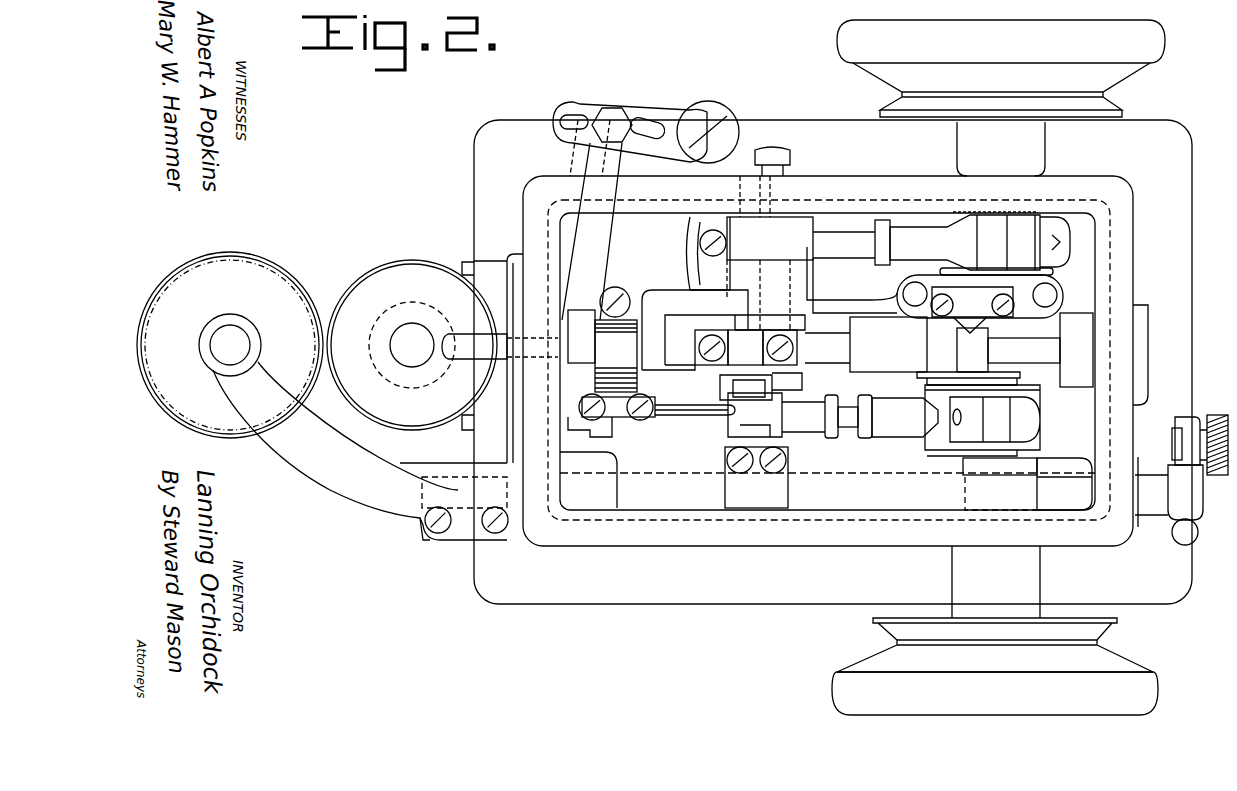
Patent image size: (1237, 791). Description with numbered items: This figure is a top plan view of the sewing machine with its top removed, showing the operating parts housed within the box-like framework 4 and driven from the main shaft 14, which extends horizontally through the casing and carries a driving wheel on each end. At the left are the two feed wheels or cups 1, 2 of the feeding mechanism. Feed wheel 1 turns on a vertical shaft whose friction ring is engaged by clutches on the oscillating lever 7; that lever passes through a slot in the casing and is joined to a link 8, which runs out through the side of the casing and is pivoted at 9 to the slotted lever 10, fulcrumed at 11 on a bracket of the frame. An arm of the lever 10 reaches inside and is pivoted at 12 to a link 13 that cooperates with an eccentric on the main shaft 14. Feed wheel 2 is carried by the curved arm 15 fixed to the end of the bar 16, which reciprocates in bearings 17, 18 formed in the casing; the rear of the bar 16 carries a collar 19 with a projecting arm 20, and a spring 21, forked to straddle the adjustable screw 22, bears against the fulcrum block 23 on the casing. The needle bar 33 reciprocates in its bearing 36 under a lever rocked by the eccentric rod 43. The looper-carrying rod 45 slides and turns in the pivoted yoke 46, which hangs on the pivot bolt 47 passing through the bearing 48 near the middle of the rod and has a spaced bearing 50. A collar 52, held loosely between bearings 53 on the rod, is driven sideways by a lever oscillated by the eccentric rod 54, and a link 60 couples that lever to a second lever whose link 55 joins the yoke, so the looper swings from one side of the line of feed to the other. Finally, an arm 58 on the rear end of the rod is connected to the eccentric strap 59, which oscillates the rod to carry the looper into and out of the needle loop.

The feed wheel 1 is at (396, 262).
The feed wheel 2 is at (298, 284).
The framework 4 is at (520, 228).
The oscillating lever 7 is at (478, 425).
The link 8 is at (590, 258).
The pivot 9 is at (612, 118).
The slotted lever 10 is at (660, 118).
The fulcrum 11 is at (712, 118).
The pivot 12 is at (698, 243).
The link 13 is at (850, 250).
The main shaft 14 is at (1050, 272).
The arm 15 is at (360, 500).
The bar 16 is at (855, 430).
The bearing 17 is at (508, 496).
The bearing 18 is at (1028, 483).
The collar 19 is at (1176, 455).
The projecting arm 20 is at (1190, 472).
The spring 21 is at (1175, 440).
The adjustable screw 22 is at (1207, 425).
The fulcrum block 23 is at (1150, 400).
The needle bar 33 is at (1024, 350).
The bearing 36 is at (1076, 350).
The eccentric rod 43 is at (1020, 380).
The looper-carrying rod 45 is at (500, 346).
The pivoted yoke 46 is at (840, 300).
The pivot bolt 47 is at (775, 150).
The bearing 48 is at (800, 235).
The bearing 50 is at (866, 344).
The collar 52 is at (740, 360).
The bearings 53 is at (700, 362).
The eccentric rod 54 is at (930, 393).
The link 55 is at (598, 420).
The arm 58 is at (972, 350).
The eccentric strap 59 is at (1030, 295).
The link 60 is at (680, 420).